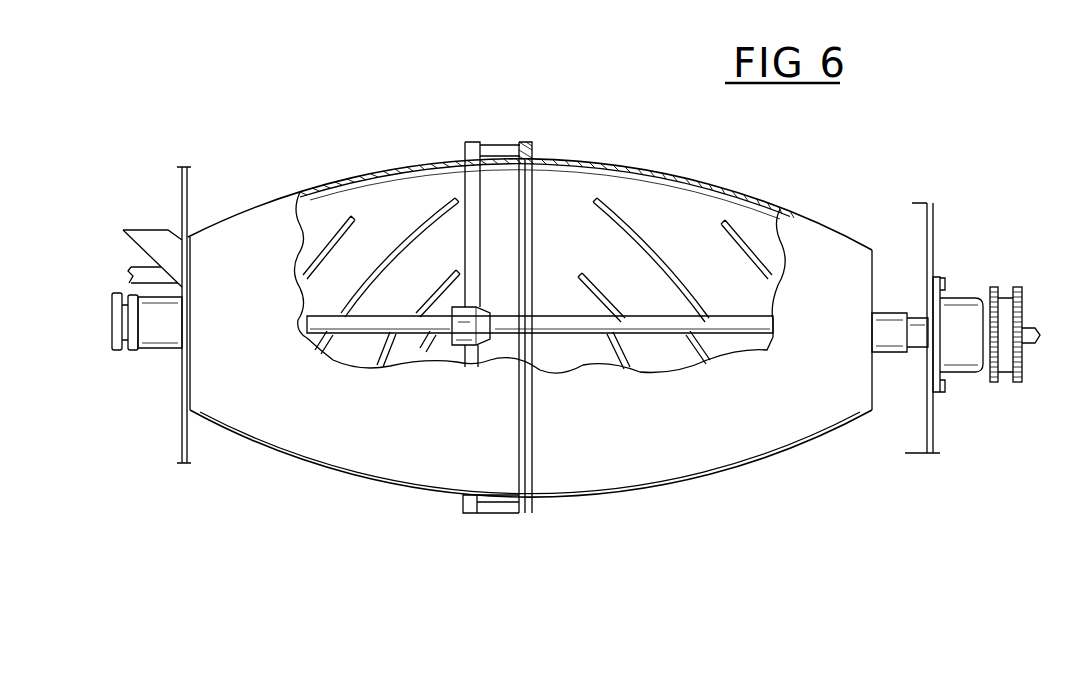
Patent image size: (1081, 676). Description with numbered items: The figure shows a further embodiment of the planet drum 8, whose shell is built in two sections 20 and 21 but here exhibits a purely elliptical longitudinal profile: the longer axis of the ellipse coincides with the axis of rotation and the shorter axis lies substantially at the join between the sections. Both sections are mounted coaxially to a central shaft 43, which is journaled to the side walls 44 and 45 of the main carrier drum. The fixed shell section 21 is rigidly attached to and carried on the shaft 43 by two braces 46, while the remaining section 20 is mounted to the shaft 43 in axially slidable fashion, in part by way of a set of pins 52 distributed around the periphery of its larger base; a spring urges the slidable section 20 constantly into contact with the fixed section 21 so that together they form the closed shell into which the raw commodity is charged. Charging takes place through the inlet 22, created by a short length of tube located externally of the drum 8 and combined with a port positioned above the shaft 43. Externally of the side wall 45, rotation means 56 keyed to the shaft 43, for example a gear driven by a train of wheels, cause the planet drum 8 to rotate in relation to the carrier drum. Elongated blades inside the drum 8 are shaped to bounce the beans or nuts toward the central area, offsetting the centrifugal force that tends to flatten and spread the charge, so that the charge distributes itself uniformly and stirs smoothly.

The planet drum 8 is at (574, 148).
The slidable shell section 20 is at (685, 169).
The fixed shell section 21 is at (376, 173).
The inlet 22 is at (135, 223).
The central shaft 43 is at (340, 320).
The side wall 44 is at (178, 447).
The side wall 45 is at (942, 212).
The braces 46 is at (457, 348).
The pins 52 is at (503, 513).
The rotation means 56 is at (1003, 283).